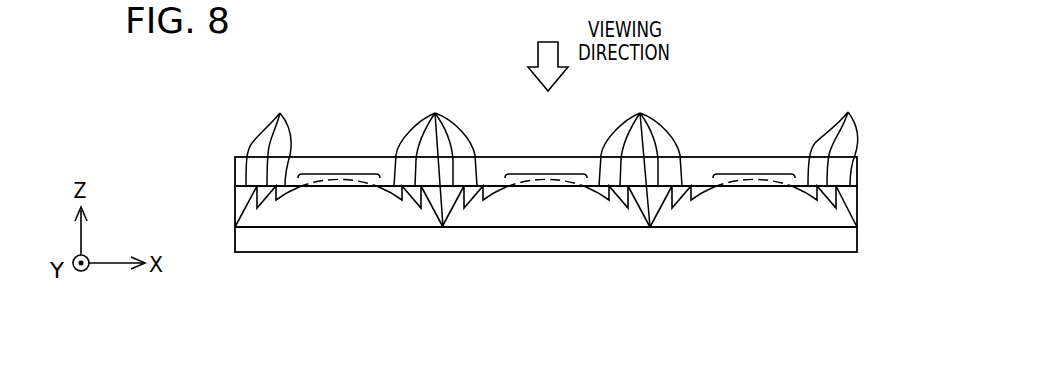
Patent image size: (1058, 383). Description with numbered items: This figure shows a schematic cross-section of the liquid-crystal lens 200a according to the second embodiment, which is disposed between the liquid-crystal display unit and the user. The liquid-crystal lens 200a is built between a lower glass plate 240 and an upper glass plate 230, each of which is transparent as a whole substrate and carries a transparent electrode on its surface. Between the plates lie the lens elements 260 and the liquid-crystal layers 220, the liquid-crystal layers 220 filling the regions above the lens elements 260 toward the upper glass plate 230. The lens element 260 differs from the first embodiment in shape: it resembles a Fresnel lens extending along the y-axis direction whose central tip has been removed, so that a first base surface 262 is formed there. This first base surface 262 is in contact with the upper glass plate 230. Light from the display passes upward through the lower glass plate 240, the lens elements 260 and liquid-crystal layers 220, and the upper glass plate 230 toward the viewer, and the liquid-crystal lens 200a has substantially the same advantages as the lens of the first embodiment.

The liquid-crystal lens 200a is at (770, 63).
The liquid-crystal layers 220 is at (553, 156).
The upper glass plate 230 is at (235, 168).
The lower glass plate 240 is at (235, 253).
The lens element 260 is at (343, 220).
The first base surface 262 is at (340, 174).